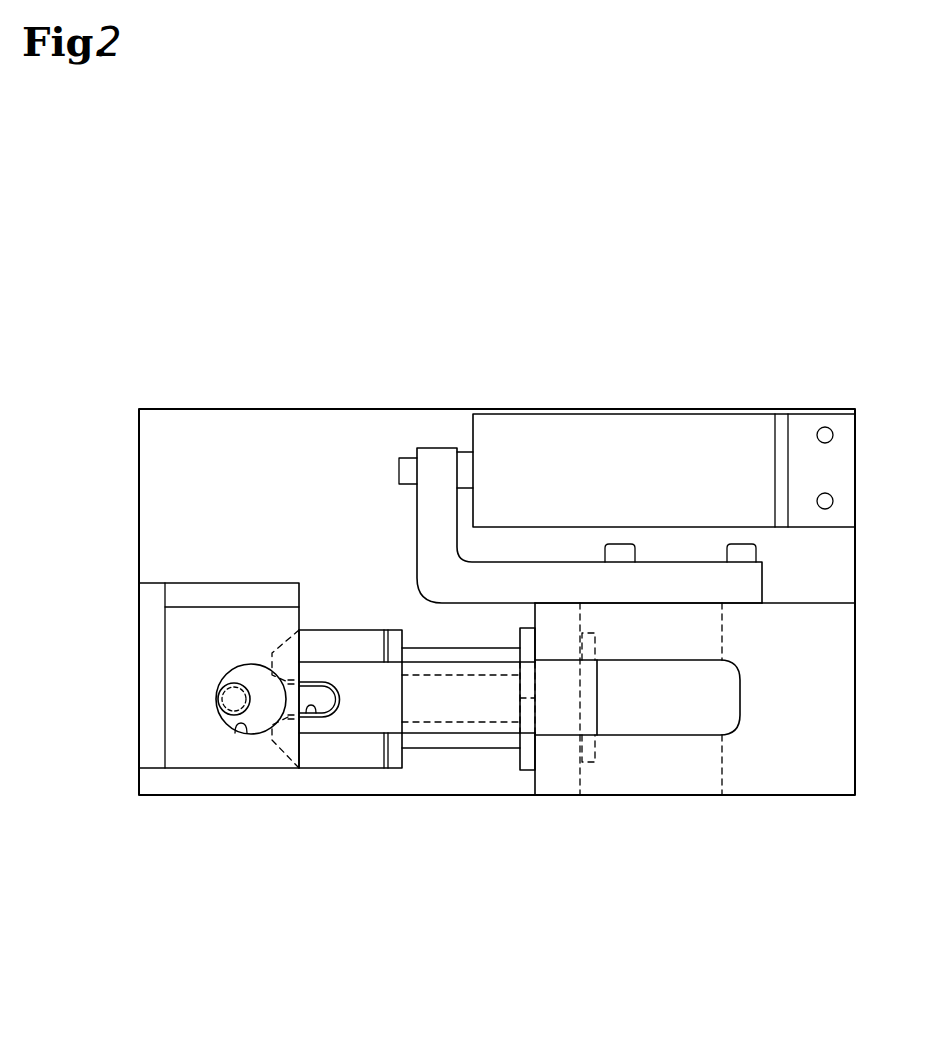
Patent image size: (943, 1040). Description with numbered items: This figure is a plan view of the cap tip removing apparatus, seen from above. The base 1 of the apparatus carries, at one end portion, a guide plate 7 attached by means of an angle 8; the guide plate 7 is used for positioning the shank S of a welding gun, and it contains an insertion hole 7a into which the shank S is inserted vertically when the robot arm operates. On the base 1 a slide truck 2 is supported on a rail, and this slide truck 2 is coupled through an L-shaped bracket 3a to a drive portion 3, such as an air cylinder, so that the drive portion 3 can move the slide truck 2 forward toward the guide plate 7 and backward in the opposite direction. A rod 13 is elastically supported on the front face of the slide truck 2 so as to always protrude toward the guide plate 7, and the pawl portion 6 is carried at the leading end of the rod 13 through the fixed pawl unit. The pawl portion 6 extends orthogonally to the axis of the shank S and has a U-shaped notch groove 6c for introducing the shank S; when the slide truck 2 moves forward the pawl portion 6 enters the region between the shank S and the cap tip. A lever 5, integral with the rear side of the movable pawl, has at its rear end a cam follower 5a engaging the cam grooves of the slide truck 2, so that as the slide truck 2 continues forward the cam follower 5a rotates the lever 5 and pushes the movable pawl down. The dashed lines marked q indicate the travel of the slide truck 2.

The base 1 is at (190, 409).
The slide truck 2 is at (837, 653).
The drive portion 3 is at (628, 428).
The L-shaped bracket 3a is at (436, 448).
The lever 5 is at (550, 715).
The cam follower 5a is at (596, 757).
The pawl portion 6 is at (275, 753).
The U-shaped notch groove 6c is at (316, 714).
The guide plate 7 is at (212, 620).
The insertion hole 7a is at (236, 734).
The angle 8 is at (148, 640).
The rod 13 is at (490, 738).
The shank S is at (223, 698).
The stroke range q is at (722, 782).